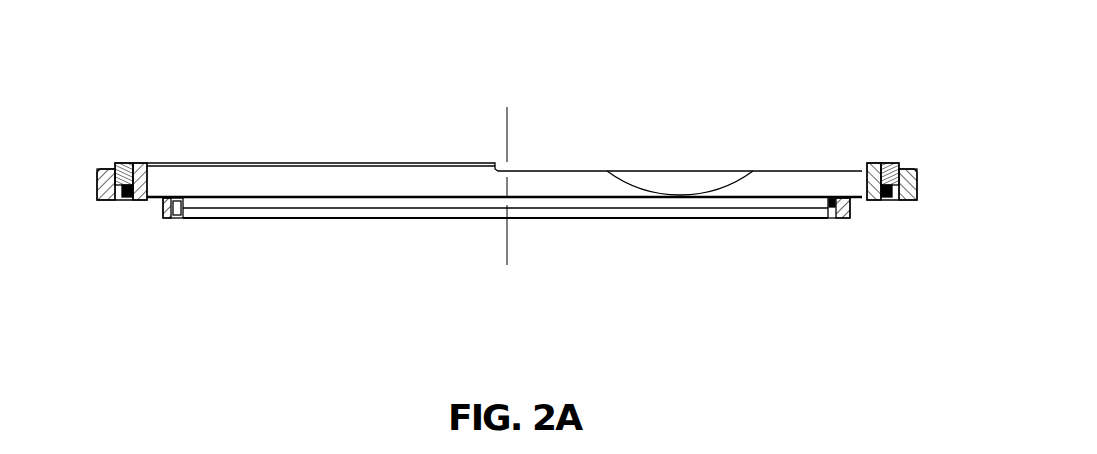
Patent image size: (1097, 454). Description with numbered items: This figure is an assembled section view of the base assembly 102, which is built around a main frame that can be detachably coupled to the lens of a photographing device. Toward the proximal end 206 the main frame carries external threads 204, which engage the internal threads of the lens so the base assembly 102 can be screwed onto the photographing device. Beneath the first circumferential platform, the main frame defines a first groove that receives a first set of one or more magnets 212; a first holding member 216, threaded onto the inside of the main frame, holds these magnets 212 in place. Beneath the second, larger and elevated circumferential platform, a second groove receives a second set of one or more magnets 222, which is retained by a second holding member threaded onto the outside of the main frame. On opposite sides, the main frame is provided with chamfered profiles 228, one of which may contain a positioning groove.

The base assembly 102 is at (518, 100).
The second set of one or more magnets 222 is at (89, 141).
The chamfered profiles 228 is at (680, 141).
The external threads 204 is at (139, 248).
The first holding member 216 is at (213, 250).
The first set of one or more magnets 212 is at (889, 232).
The proximal end 206 is at (541, 262).